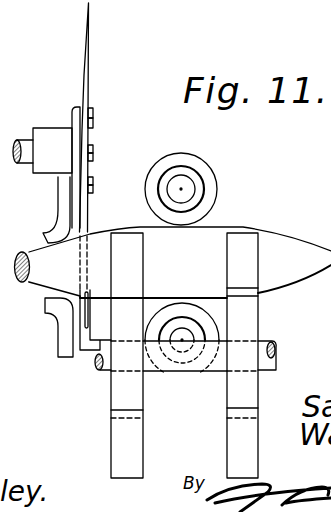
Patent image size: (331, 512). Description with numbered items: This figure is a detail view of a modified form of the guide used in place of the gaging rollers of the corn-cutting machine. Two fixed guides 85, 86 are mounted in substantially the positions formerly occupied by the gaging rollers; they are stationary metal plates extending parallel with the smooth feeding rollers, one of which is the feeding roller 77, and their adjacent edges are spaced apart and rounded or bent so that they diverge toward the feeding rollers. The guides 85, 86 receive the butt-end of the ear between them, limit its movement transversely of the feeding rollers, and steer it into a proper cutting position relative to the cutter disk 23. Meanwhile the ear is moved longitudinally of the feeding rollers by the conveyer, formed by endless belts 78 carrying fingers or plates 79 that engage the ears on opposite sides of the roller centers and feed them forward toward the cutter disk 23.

The cutter disk 23 is at (83, 79).
The feeding roller 77 is at (214, 190).
The endless belt 78 is at (228, 393).
The fingers or plates 79 is at (228, 257).
The fixed guide 85 is at (58, 210).
The fixed guide 86 is at (56, 324).